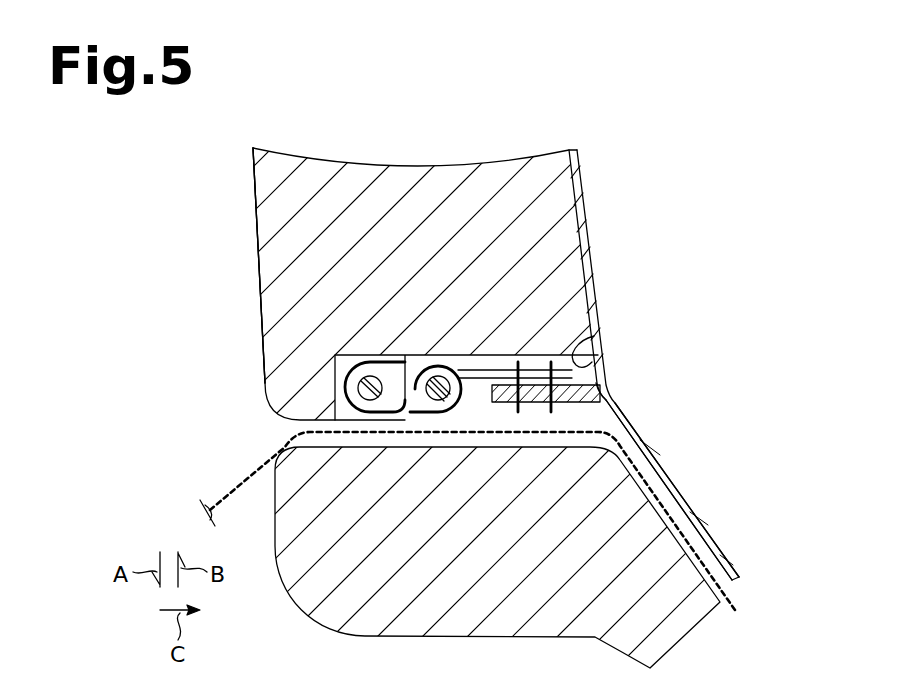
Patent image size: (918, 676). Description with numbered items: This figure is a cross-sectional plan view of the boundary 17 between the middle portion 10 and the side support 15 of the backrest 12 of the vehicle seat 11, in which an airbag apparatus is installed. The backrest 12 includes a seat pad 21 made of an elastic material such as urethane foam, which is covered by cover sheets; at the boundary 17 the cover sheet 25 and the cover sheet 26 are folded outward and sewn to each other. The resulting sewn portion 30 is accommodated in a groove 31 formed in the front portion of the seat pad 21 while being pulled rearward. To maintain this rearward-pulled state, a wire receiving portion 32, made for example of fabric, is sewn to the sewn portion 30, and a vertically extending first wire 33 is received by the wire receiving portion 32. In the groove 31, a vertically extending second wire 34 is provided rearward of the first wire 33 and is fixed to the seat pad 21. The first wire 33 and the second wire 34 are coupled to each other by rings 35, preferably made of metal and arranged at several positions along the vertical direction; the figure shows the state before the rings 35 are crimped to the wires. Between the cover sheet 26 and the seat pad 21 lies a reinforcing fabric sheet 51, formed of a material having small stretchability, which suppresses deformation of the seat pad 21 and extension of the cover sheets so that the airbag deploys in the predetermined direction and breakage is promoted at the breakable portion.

The middle portion 10 is at (255, 172).
The vehicle seat 11 is at (262, 250).
The backrest 12 is at (212, 265).
The cover sheet 25 is at (591, 182).
The seat pad 21 is at (588, 268).
The cover sheet 26 is at (690, 498).
The side support 15 is at (690, 570).
The reinforcing fabric sheet 51 is at (247, 480).
The ring 35 is at (416, 418).
The second wire 34 is at (370, 378).
The first wire 33 is at (440, 380).
The wire receiving portion 32 is at (485, 358).
The sewn portion 30 is at (566, 405).
The groove 31 is at (590, 350).
The boundary 17 is at (625, 393).